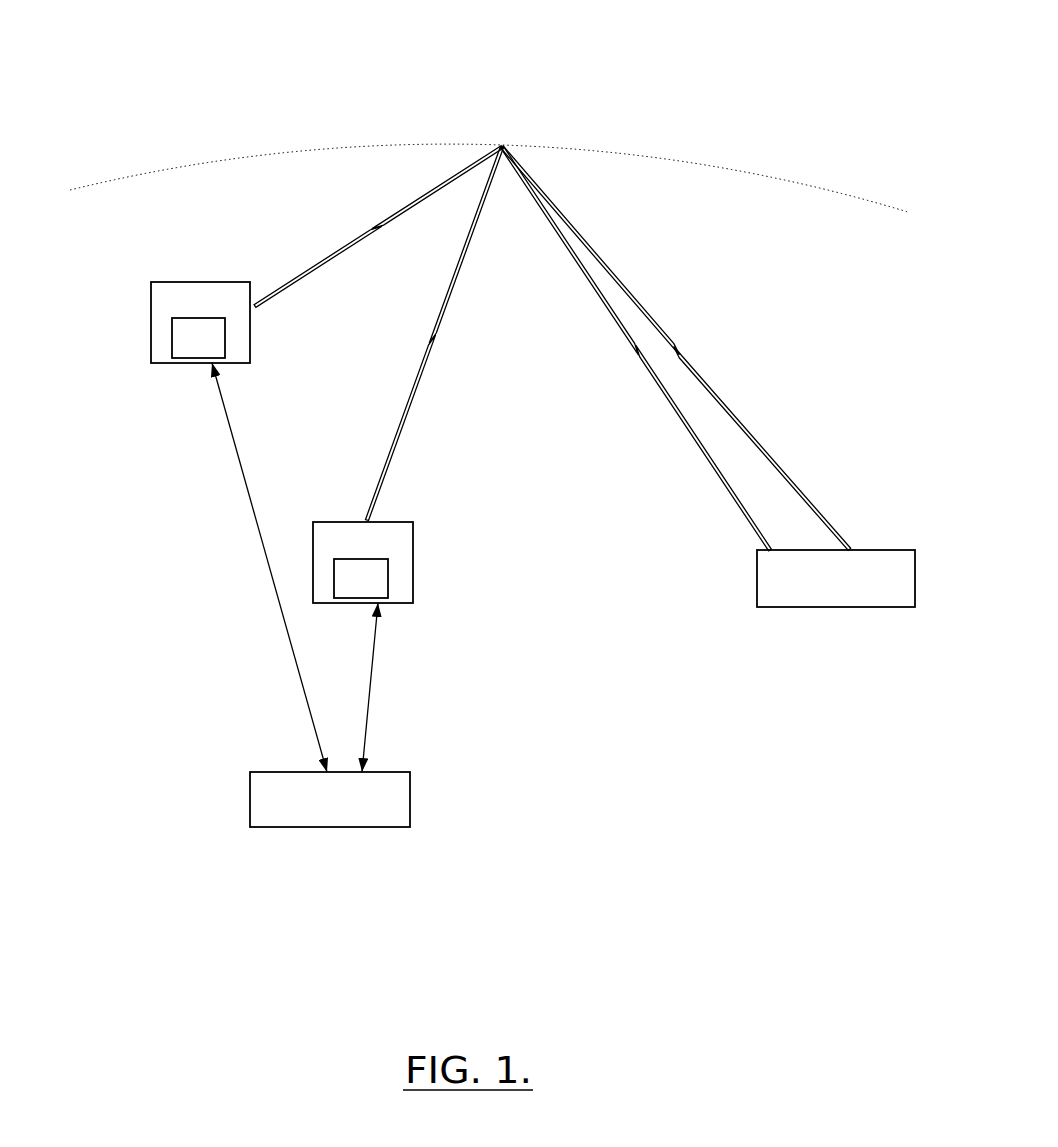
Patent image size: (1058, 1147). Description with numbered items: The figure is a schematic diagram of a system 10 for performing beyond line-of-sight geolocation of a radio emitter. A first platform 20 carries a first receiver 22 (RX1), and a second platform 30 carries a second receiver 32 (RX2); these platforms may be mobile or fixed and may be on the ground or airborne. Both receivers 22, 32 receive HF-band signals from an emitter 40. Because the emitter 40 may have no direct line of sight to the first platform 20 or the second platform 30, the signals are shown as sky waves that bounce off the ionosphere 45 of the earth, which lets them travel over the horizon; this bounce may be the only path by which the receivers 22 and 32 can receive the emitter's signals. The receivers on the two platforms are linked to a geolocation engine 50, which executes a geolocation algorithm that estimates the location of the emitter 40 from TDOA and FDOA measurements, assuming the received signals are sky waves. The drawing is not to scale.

The system 10 is at (794, 24).
The first platform 20 is at (224, 306).
The first receiver 22 is at (250, 325).
The second platform 30 is at (356, 544).
The second receiver 32 is at (328, 567).
The emitter 40 is at (837, 564).
The ionosphere 45 is at (489, 167).
The geolocation engine 50 is at (340, 784).